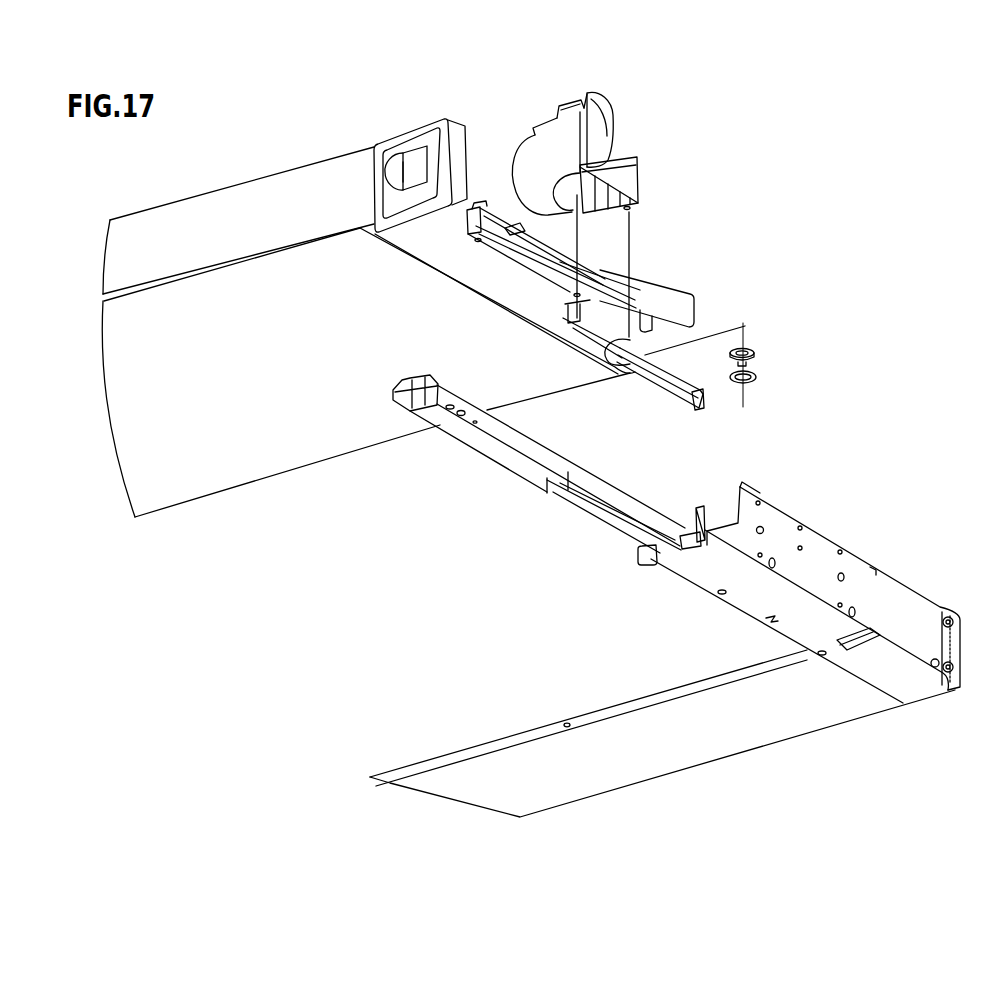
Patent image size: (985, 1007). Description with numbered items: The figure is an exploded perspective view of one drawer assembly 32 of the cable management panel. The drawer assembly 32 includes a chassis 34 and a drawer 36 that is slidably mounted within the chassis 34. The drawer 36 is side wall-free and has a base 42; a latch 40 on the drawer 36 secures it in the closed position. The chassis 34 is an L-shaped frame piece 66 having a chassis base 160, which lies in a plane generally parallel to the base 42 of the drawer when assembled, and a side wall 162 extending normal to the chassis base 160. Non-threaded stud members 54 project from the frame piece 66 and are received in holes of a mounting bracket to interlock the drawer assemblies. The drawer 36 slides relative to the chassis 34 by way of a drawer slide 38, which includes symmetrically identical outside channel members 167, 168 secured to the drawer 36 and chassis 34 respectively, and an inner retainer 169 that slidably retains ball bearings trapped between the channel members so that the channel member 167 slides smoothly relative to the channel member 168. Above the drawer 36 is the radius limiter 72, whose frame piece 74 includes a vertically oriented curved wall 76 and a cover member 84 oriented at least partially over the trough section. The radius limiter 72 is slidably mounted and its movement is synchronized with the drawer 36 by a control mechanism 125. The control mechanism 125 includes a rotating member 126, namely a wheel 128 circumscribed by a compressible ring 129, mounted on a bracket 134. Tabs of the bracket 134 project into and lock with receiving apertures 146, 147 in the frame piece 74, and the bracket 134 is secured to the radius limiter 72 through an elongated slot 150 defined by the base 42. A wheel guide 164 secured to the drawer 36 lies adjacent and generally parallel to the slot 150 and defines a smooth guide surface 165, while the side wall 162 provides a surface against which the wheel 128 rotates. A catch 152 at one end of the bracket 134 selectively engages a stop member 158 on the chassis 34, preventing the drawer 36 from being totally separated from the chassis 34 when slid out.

The drawer assembly 32 is at (669, 479).
The chassis 34 is at (853, 555).
The drawer 36 is at (330, 157).
The drawer slide 38 is at (555, 478).
The latch 40 is at (402, 152).
The base 42 is at (338, 433).
The non-threaded stud member 54 is at (763, 533).
The L-shaped frame piece 66 is at (893, 582).
The radius limiter 72 is at (599, 141).
The frame piece 74 is at (633, 160).
The curved wall 76 is at (517, 133).
The cover member 84 is at (571, 109).
The control mechanism 125 is at (652, 320).
The rotating member 126 is at (784, 342).
The wheel 128 is at (757, 355).
The compressible ring 129 is at (757, 378).
The bracket 134 is at (657, 383).
The receiving aperture 146 is at (582, 209).
The receiving aperture 147 is at (628, 212).
The elongated slot 150 is at (607, 282).
The catch 152 is at (692, 405).
The stop member 158 is at (693, 536).
The chassis base 160 is at (750, 615).
The side wall 162 is at (812, 532).
The wheel guide 164 is at (640, 312).
The guide surface 165 is at (538, 258).
The outside channel member 167 is at (557, 453).
The outside channel member 168 is at (682, 546).
The inner retainer 169 is at (610, 520).